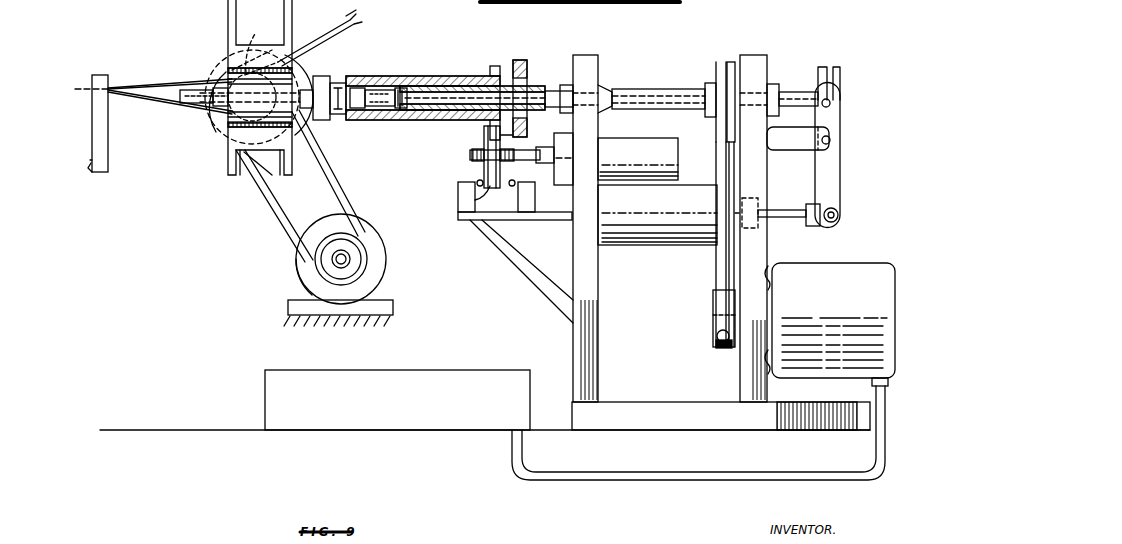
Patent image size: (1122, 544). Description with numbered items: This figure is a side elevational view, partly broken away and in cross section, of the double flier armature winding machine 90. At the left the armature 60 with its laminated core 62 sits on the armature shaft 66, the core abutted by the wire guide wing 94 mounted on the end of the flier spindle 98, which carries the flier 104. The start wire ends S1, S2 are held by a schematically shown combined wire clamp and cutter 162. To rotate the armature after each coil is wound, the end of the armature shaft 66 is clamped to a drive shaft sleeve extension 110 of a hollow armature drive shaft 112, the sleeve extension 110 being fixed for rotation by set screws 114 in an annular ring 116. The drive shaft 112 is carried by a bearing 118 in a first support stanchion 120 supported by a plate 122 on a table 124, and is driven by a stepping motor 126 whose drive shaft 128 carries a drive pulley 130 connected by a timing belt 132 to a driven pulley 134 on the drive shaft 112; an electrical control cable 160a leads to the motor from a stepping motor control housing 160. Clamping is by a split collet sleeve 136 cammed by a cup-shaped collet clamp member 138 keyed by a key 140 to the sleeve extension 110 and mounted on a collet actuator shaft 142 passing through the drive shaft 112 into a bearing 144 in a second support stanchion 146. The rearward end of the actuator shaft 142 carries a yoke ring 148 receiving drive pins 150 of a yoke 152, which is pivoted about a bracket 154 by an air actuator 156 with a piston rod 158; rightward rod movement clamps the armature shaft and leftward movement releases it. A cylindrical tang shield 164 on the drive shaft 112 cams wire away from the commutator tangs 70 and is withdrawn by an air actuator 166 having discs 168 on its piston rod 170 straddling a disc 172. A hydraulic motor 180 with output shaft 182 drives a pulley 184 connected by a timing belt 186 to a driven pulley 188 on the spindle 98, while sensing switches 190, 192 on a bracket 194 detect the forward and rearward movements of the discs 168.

The armature 60 is at (221, 56).
The laminated core 62 is at (220, 130).
The armature shaft 66 is at (304, 80).
The tangs 70 is at (328, 173).
The double flier armature winding machine 90 is at (398, 182).
The wire guide wing 94 is at (240, 22).
The flier spindle 98 is at (200, 116).
The flier 104 is at (326, 28).
The drive shaft sleeve extension 110 is at (508, 74).
The hollow armature drive shaft 112 is at (632, 88).
The set screws 114 is at (524, 60).
The annular ring 116 is at (528, 133).
The bearing 118 is at (571, 56).
The first support stanchion 120 is at (572, 247).
The plate 122 is at (662, 402).
The table 124 is at (550, 428).
The stepping motor 126 is at (814, 262).
The drive shaft 128 is at (730, 350).
The drive pulley 130 is at (710, 334).
The timing belt 132 is at (716, 279).
The driven pulley 134 is at (720, 70).
The split collet sleeve 136 is at (360, 118).
The cup-shaped collet clamp member 138 is at (398, 110).
The key 140 is at (406, 88).
The collet actuator shaft 142 is at (534, 88).
The bearing 144 is at (774, 82).
The second support stanchion 146 is at (750, 56).
The yoke ring 148 is at (822, 68).
The drive pins 150 is at (828, 100).
The yoke 152 is at (840, 123).
The bracket 154 is at (832, 140).
The air actuator 156 is at (626, 248).
The piston rod 158 is at (780, 210).
The stepping motor control housing 160 is at (265, 398).
The electrical control cable 160a is at (694, 475).
The combined wire clamp and cutter 162 is at (112, 154).
The cylindrical tang shield 164 is at (366, 76).
The air actuator 166 is at (676, 165).
The discs 168 is at (478, 188).
The piston rod 170 is at (470, 172).
The disc 172 is at (490, 66).
The hydraulic motor 180 is at (398, 250).
The output shaft 182 is at (346, 258).
The pulley 184 is at (334, 238).
The timing belt 186 is at (276, 221).
The driven pulley 188 is at (250, 42).
The sensing switch 190 is at (540, 194).
The sensing switch 192 is at (460, 194).
The bracket 194 is at (492, 240).
The start wire end S1 is at (168, 80).
The start wire end S2 is at (164, 99).